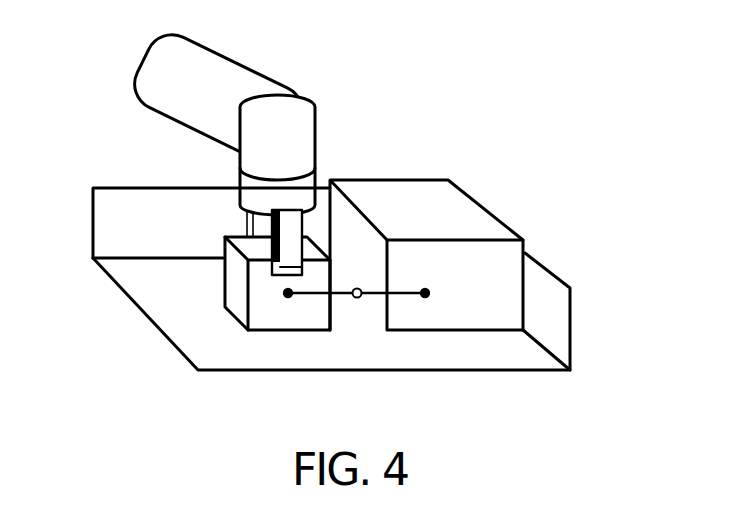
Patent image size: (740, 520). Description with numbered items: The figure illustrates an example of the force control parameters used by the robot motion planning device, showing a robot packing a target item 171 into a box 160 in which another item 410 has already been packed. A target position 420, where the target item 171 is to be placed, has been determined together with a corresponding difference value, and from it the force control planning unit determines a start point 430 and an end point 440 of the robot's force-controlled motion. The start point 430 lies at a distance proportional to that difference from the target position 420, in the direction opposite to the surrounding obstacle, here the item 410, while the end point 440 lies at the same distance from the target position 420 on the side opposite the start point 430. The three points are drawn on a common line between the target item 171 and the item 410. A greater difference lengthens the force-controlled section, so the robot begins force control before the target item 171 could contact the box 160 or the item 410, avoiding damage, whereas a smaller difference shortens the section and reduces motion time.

The box 160 is at (133, 188).
The target item 171 is at (236, 288).
The item 410 is at (463, 204).
The target position 420 is at (357, 297).
The start point 430 is at (288, 297).
The end point 440 is at (425, 297).